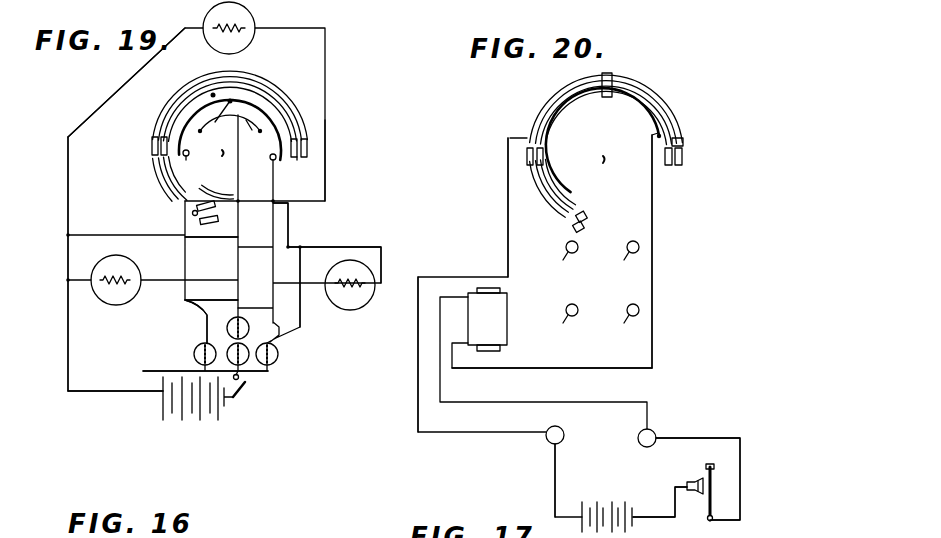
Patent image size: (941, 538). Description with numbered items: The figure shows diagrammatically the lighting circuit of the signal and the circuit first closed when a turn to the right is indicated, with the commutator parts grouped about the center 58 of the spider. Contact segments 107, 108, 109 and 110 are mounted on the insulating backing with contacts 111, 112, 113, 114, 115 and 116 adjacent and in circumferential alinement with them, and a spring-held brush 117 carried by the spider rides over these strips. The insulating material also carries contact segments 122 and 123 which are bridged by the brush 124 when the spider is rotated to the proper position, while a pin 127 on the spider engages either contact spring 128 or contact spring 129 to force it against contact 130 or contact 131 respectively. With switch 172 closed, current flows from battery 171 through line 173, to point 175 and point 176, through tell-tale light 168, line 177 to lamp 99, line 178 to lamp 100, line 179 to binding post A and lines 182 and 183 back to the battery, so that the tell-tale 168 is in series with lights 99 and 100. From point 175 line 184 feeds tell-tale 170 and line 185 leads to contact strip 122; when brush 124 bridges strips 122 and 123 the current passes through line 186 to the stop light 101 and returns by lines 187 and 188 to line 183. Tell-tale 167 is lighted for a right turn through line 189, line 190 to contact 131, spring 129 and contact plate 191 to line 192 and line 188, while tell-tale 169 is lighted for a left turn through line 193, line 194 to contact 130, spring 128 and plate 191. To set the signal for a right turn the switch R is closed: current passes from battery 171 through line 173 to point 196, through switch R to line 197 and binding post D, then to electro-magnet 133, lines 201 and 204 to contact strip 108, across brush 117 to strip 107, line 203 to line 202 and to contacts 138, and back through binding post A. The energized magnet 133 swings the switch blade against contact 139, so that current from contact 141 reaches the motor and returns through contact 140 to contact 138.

In FIG. 19, the stop light 101 is at (247, 18).
In FIG. 19, the line 187 is at (108, 108).
In FIG. 19, the contact segment 107 is at (300, 74).
In FIG. 20, the contact segment 107 is at (660, 95).
In FIG. 19, the contact segment 108 is at (290, 100).
In FIG. 20, the contact segment 108 is at (680, 125).
In FIG. 19, the contact segment 109 is at (168, 195).
In FIG. 20, the contact segment 109 is at (555, 212).
In FIG. 19, the contact segment 110 is at (180, 193).
In FIG. 20, the contact segment 110 is at (567, 208).
In FIG. 19, the brush 124 is at (213, 95).
In FIG. 19, the contact spring 129 is at (186, 128).
In FIG. 19, the pin 127 is at (230, 126).
In FIG. 19, the contact plate 191 is at (264, 138).
In FIG. 19, the pointer 58 is at (224, 162).
In FIG. 20, the pointer 58 is at (616, 167).
In FIG. 19, the contact 113 is at (152, 140).
In FIG. 20, the contact 113 is at (527, 152).
In FIG. 19, the contact 114 is at (161, 148).
In FIG. 20, the contact 114 is at (537, 160).
In FIG. 19, the contact spring 128 is at (310, 140).
In FIG. 19, the contact 111 is at (310, 150).
In FIG. 20, the contact 111 is at (682, 157).
In FIG. 19, the contact 112 is at (297, 160).
In FIG. 20, the contact 112 is at (668, 165).
In FIG. 19, the contact 131 is at (188, 156).
In FIG. 19, the contact 130 is at (275, 160).
In FIG. 19, the line 186 is at (325, 191).
In FIG. 19, the line 185 is at (290, 224).
In FIG. 19, the line 192 is at (93, 233).
In FIG. 19, the contact segment 122 is at (192, 207).
In FIG. 19, the contact segment 123 is at (213, 213).
In FIG. 19, the contact 116 is at (218, 213).
In FIG. 19, the contact 115 is at (215, 225).
In FIG. 19, the line 188 is at (49, 264).
In FIG. 19, the lamp 100 is at (124, 264).
In FIG. 19, the line 179 is at (79, 284).
In FIG. 19, the line 190 is at (185, 247).
In FIG. 19, the line 178 is at (211, 277).
In FIG. 19, the line 177 is at (334, 247).
In FIG. 19, the line 194 is at (273, 260).
In FIG. 19, the lamp 99 is at (355, 270).
In FIG. 19, the tell-tale light 168 is at (190, 304).
In FIG. 19, the tell-tale light 169 is at (197, 345).
In FIG. 19, the line 193 is at (194, 350).
In FIG. 19, the line 184 is at (242, 372).
In FIG. 19, the tell-tale light 167 is at (279, 350).
In FIG. 19, the line 189 is at (293, 361).
In FIG. 19, the tell-tale light 170 is at (240, 368).
In FIG. 19, the point 175 is at (188, 374).
In FIG. 19, the line 183 is at (103, 392).
In FIG. 19, the battery 171 is at (191, 417).
In FIG. 20, the battery 171 is at (603, 502).
In FIG. 19, the point 176 is at (246, 388).
In FIG. 19, the switch 172 is at (234, 399).
In FIG. 20, the brush 117 is at (613, 75).
In FIG. 20, the line 203 is at (486, 207).
In FIG. 20, the line 204 is at (652, 272).
In FIG. 20, the contact 138 is at (565, 258).
In FIG. 20, the contact 139 is at (625, 258).
In FIG. 20, the contact 141 is at (577, 321).
In FIG. 20, the contact 140 is at (629, 321).
In FIG. 20, the electro-magnet 133 is at (497, 335).
In FIG. 20, the line 201 is at (578, 368).
In FIG. 20, the line 202 is at (418, 387).
In FIG. 20, the binding post A is at (565, 435).
In FIG. 20, the binding post D is at (637, 446).
In FIG. 20, the line 182 is at (548, 478).
In FIG. 20, the line 173 is at (655, 518).
In FIG. 20, the point 196 is at (684, 476).
In FIG. 20, the line 197 is at (740, 458).
In FIG. 20, the switch R is at (710, 492).